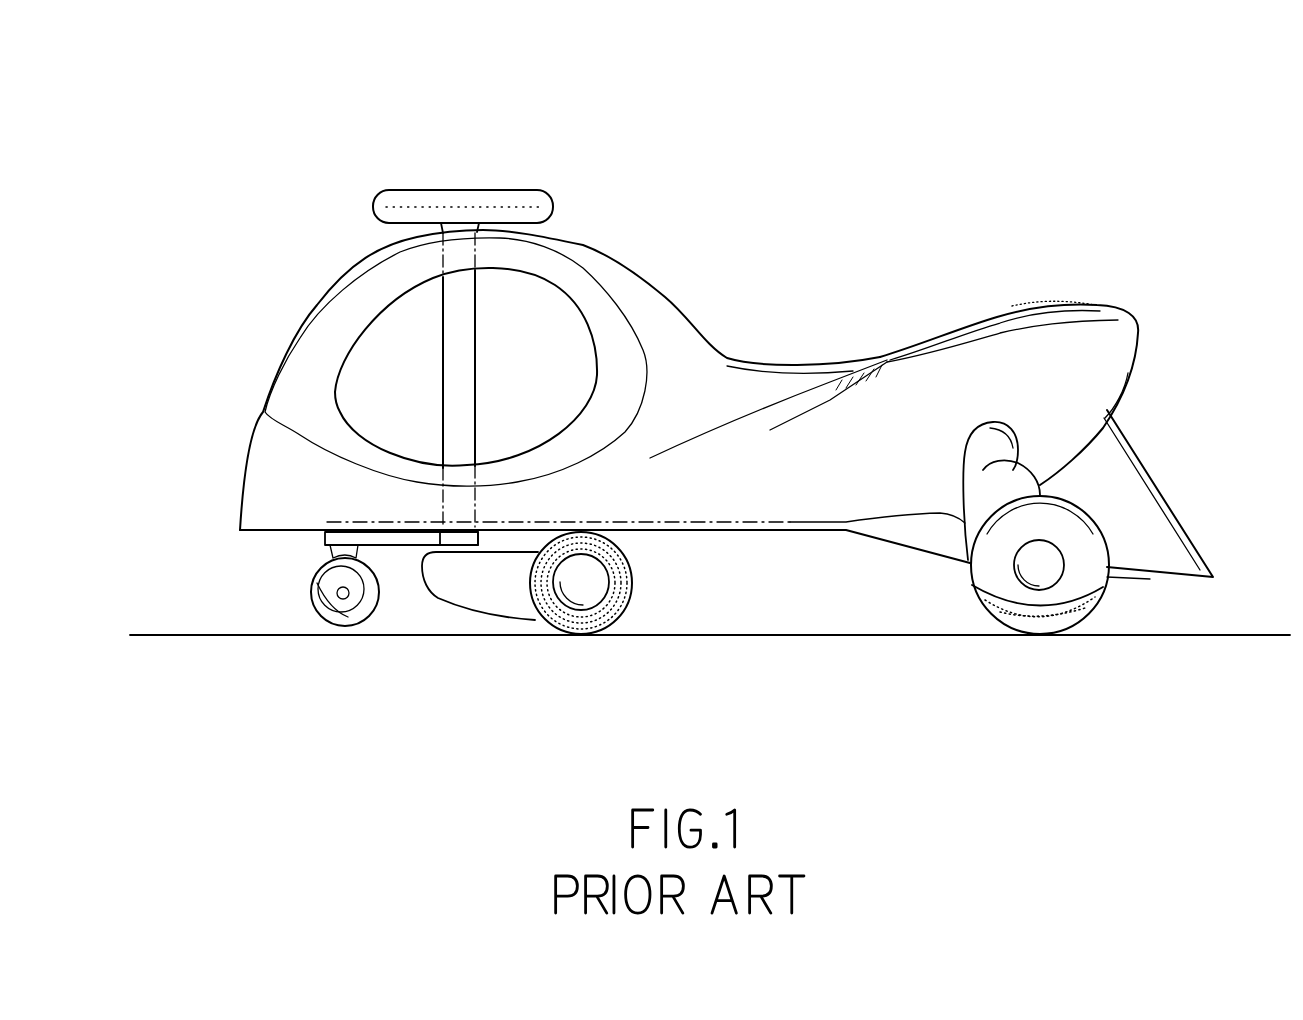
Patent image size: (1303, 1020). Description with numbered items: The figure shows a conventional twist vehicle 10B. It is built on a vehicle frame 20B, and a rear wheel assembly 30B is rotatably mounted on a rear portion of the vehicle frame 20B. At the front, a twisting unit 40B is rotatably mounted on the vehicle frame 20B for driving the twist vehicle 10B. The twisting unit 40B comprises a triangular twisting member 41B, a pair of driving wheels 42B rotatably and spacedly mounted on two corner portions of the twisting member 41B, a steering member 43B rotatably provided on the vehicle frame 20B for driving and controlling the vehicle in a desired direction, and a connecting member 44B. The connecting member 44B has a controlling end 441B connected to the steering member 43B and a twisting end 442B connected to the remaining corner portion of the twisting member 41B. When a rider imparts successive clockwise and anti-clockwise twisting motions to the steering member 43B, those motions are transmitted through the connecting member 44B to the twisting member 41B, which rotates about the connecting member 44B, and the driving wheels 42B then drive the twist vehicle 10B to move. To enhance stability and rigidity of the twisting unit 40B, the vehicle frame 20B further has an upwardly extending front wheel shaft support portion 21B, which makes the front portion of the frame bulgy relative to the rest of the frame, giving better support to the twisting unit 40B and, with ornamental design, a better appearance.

The twist vehicle 10B is at (710, 389).
The vehicle frame 20B is at (931, 368).
The front wheel shaft support portion 21B is at (487, 319).
The rear wheel assembly 30B is at (1036, 566).
The twisting unit 40B is at (436, 630).
The twisting member 41B is at (343, 624).
The driving wheels 42B is at (582, 622).
The steering member 43B is at (478, 154).
The connecting member 44B is at (464, 480).
The controlling end 441B is at (316, 286).
The twisting end 442B is at (481, 601).